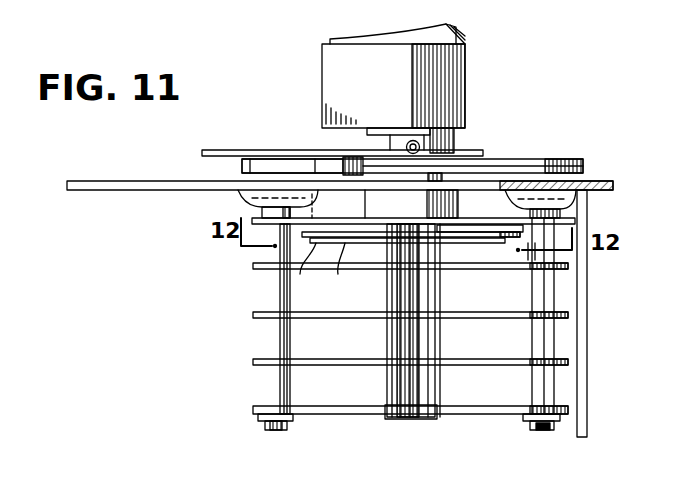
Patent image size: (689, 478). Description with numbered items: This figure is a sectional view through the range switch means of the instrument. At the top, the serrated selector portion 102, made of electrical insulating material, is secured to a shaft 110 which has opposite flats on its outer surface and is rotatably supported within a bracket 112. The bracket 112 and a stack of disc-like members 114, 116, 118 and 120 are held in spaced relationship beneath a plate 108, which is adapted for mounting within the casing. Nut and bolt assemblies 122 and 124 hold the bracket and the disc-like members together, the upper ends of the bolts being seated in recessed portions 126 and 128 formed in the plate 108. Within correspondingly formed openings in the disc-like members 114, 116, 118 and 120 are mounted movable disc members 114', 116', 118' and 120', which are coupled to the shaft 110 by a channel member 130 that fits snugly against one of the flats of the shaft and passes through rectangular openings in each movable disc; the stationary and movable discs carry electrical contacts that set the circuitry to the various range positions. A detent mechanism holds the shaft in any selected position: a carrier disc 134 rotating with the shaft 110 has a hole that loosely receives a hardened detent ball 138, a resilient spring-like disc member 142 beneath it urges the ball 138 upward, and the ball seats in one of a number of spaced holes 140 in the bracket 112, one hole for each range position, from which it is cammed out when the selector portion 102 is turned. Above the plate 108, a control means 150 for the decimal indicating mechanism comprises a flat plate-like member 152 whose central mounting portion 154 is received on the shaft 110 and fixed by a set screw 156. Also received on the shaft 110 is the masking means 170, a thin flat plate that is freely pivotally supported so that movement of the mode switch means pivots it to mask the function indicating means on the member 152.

The selector portion 102 is at (390, 83).
The central mounting portion 154 is at (457, 138).
The set screw 156 is at (412, 140).
The masking means 170 is at (222, 149).
The flat plate-like member 152 is at (494, 160).
The control means 150 is at (596, 166).
The recessed portion 126 is at (247, 196).
The plate 108 is at (126, 190).
The recessed portion 128 is at (576, 199).
The spaced holes 140 is at (296, 204).
The bracket 112 is at (384, 202).
The detent ball 138 is at (494, 232).
The carrier disc 134 is at (313, 266).
The resilient spring-like disc member 142 is at (346, 262).
The shaft 110 is at (393, 306).
The channel member 130 is at (435, 294).
The nut and bolt assembly 122 is at (284, 422).
The nut and bolt assembly 124 is at (538, 428).
The disc-like member 114 is at (390, 277).
The disc-like member 116 is at (388, 324).
The disc-like member 118 is at (388, 369).
The disc-like member 120 is at (387, 415).
The disc member 114' is at (515, 286).
The disc member 116' is at (515, 333).
The disc member 118' is at (515, 379).
The disc member 120' is at (495, 431).